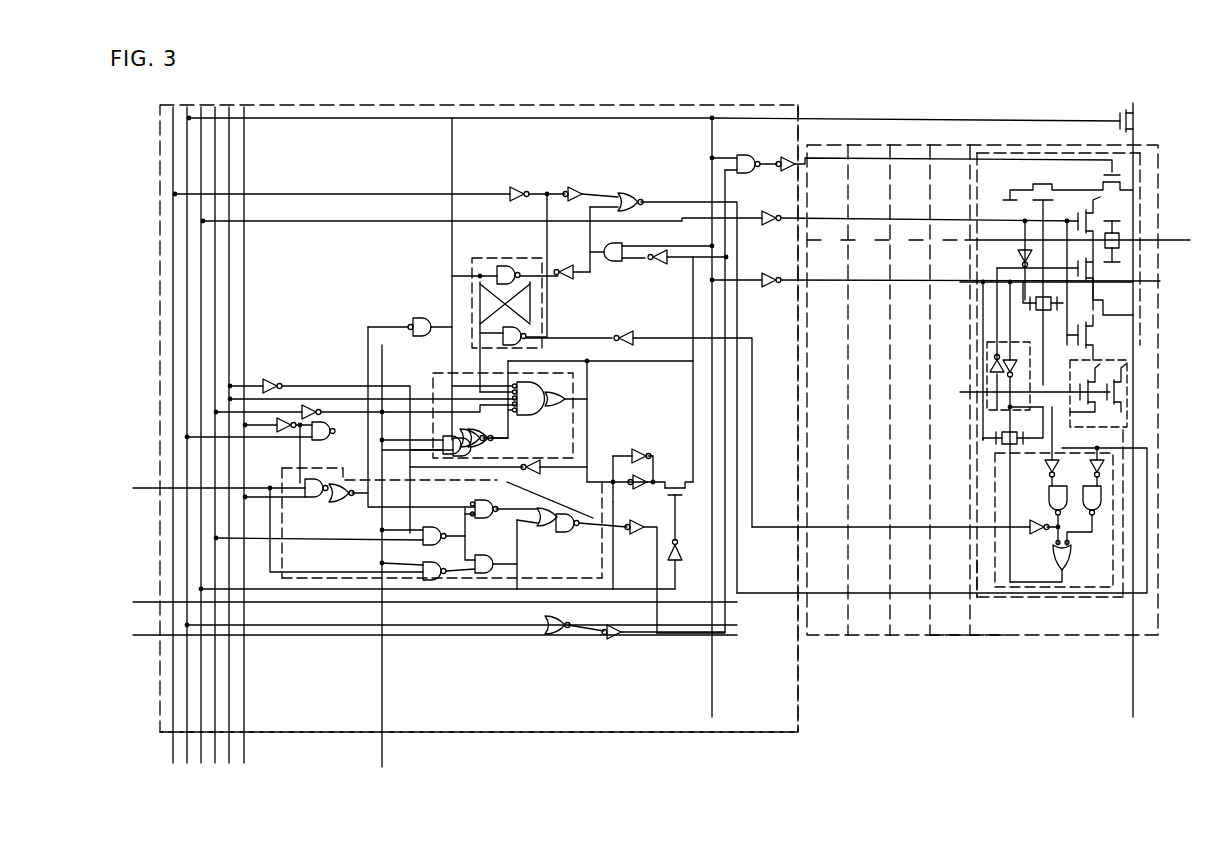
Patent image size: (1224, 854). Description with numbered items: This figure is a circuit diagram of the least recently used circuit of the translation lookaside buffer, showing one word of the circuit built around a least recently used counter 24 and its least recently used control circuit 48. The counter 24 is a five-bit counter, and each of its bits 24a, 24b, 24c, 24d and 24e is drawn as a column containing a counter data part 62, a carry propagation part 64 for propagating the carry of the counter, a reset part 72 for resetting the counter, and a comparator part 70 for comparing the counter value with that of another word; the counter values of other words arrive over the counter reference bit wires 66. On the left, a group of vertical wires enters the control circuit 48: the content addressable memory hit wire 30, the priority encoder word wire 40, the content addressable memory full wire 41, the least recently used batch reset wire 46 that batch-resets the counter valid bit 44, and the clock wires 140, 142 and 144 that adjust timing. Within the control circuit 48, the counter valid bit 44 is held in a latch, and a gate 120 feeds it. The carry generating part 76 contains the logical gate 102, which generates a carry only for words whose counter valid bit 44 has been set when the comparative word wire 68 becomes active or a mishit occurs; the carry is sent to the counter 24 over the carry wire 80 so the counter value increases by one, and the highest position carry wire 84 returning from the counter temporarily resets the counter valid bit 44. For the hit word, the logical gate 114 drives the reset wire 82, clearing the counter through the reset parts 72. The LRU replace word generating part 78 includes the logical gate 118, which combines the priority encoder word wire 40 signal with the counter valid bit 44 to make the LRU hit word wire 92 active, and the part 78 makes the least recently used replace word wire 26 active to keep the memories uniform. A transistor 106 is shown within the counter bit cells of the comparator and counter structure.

The least recently used counter 24 is at (968, 637).
The counter bit 24a is at (1008, 628).
The counter bit 24b is at (945, 622).
The counter bit 24c is at (905, 627).
The counter bit 24d is at (868, 623).
The counter bit 24e is at (826, 620).
The least recently used replace word wire 26 is at (160, 602).
The content addressable memory hit wire 30 is at (160, 635).
The priority encoder word wire 40 is at (203, 489).
The content addressable memory full wire 41 is at (246, 163).
The counter valid bit 44 is at (472, 268).
The least recently used batch reset wire 46 is at (173, 757).
The least recently used control circuit 48 is at (730, 733).
The counter data part 62 is at (987, 405).
The carry propagation part 64 is at (1072, 598).
The counter reference bit wire 66 is at (1135, 707).
The comparative word wire 68 is at (768, 347).
The comparator part 70 is at (1078, 413).
The reset part 72 is at (1127, 370).
The carry generating part 76 is at (575, 438).
The LRU replace word generating part 78 is at (500, 585).
The carry wire 80 is at (203, 118).
The reset wire 82 is at (798, 398).
The highest position carry wire 84 is at (752, 515).
The LRU hit word wire 92 is at (978, 398).
The logical gate 102 is at (540, 392).
The transistor 106 is at (1030, 190).
The logical gate 114 is at (615, 262).
The logical gate 118 is at (435, 583).
The gate 120 is at (410, 313).
The clock wire 140 is at (368, 351).
The clock wire 142 is at (215, 764).
The clock wire 144 is at (712, 109).